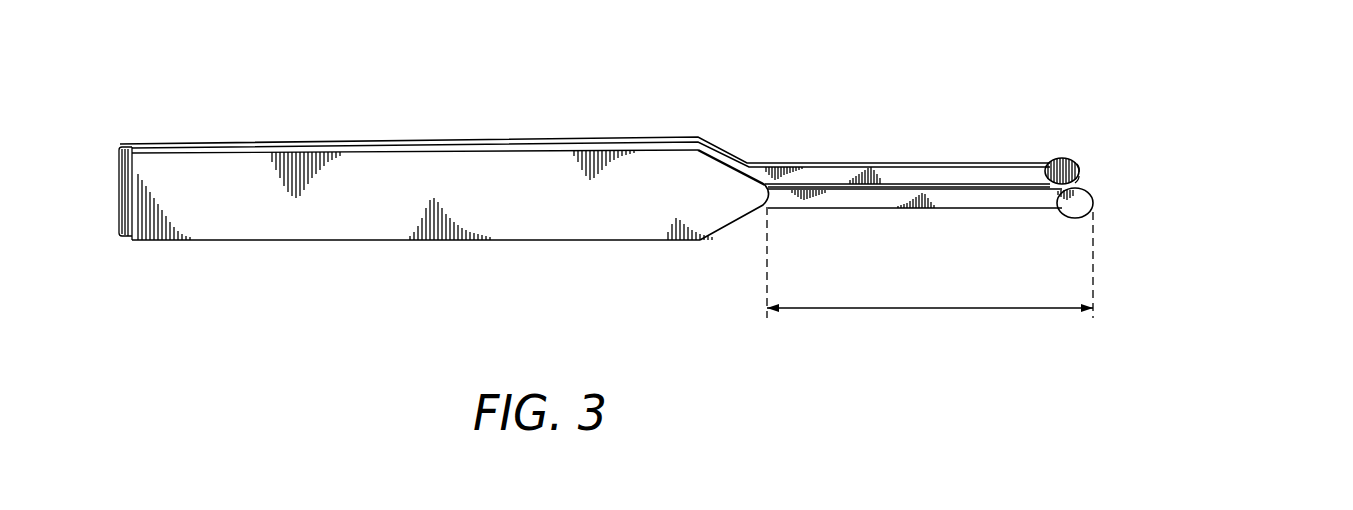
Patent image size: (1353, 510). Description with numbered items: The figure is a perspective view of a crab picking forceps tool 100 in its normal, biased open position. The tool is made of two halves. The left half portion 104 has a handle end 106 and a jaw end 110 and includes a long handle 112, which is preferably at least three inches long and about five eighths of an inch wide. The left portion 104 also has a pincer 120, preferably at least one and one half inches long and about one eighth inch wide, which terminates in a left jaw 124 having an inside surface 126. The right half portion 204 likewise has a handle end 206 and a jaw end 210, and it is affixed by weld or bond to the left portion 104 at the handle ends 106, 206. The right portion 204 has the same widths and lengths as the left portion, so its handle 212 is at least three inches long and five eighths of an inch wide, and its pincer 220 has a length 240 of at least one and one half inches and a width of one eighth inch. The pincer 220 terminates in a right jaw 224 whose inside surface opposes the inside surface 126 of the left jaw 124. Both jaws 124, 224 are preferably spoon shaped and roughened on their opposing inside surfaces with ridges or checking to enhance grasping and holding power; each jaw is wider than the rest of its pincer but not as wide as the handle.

The crab picking forceps tool 100 is at (398, 75).
The left half portion 104 is at (670, 137).
The handle end 106 is at (120, 145).
The jaw end 110 is at (1082, 168).
The handle 112 is at (548, 137).
The pincer 120 is at (945, 162).
The left jaw 124 is at (1063, 159).
The inside surface 126 is at (1082, 176).
The right half portion 204 is at (637, 241).
The handle end 206 is at (131, 242).
The jaw end 210 is at (1092, 197).
The handle 212 is at (493, 241).
The pincer 220 is at (921, 208).
The right jaw 224 is at (1066, 218).
The length 240 is at (904, 311).